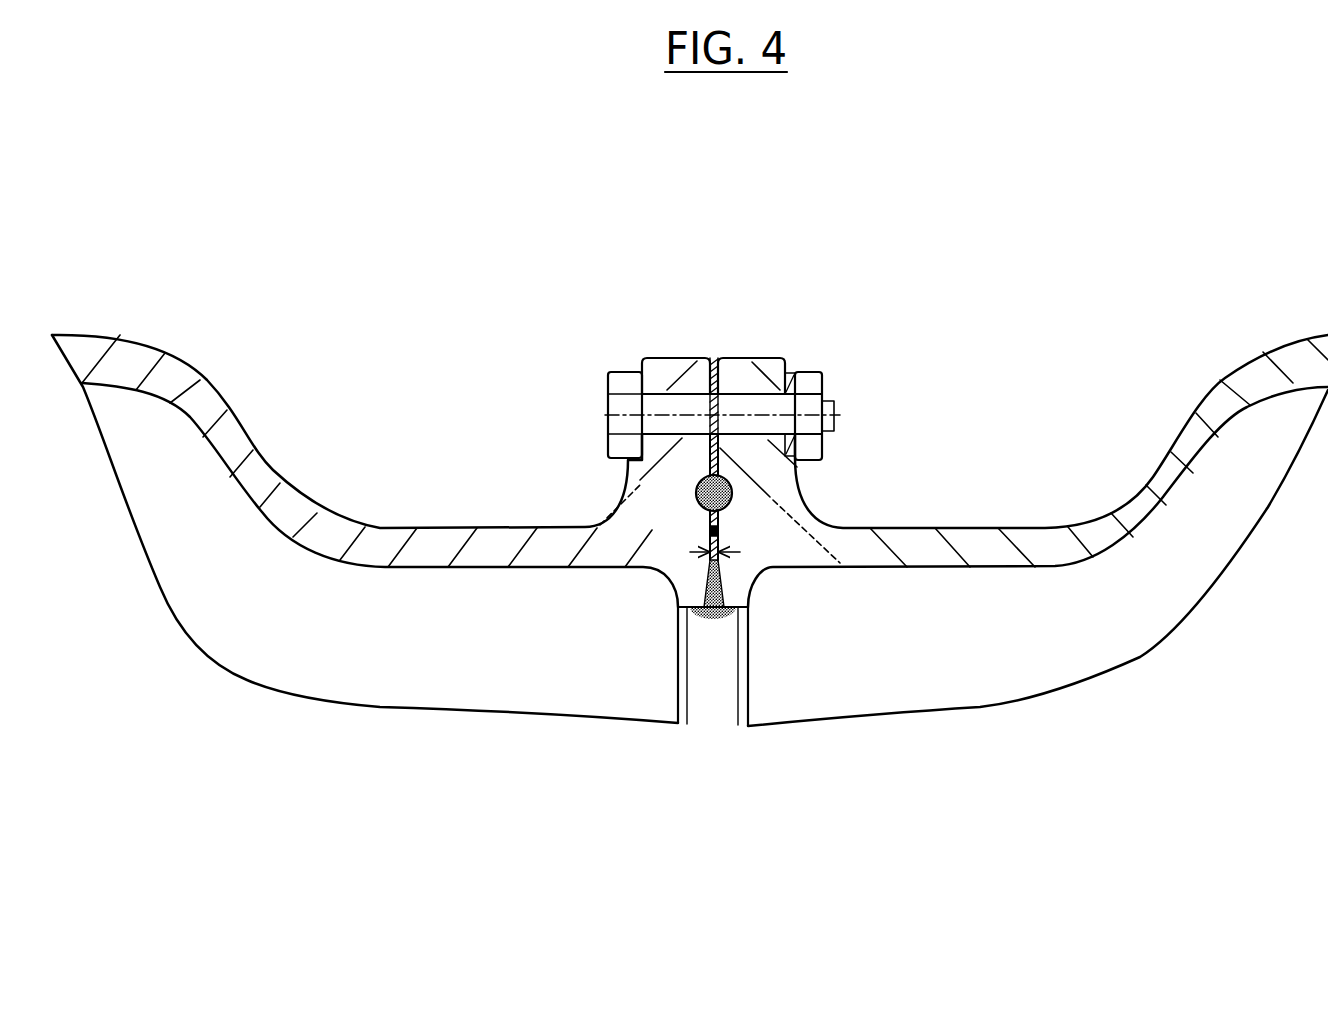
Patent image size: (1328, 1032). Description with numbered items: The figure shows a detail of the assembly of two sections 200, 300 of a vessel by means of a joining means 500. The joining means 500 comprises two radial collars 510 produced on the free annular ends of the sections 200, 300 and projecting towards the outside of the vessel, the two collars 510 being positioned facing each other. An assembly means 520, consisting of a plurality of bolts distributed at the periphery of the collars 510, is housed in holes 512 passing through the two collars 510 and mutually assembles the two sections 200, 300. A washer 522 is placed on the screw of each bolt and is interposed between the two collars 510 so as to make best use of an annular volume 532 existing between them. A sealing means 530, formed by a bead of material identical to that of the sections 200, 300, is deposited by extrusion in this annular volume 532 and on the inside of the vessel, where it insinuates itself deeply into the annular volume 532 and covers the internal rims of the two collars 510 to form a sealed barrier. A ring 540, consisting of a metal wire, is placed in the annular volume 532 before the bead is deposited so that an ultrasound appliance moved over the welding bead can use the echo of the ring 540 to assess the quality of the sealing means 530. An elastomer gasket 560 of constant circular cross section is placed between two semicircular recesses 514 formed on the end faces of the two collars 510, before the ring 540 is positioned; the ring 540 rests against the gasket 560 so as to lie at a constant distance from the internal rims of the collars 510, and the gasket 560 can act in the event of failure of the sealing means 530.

The section 200 is at (218, 360).
The section 300 is at (1210, 363).
The joining means 500 is at (746, 490).
The radial collar 510 is at (693, 358).
The hole 512 is at (665, 358).
The recess 514 is at (698, 490).
The assembly means 520 is at (612, 373).
The washer 522 is at (714, 358).
The sealing means 530 is at (703, 620).
The annular volume 532 is at (728, 566).
The ring 540 is at (718, 532).
The gasket 560 is at (697, 494).